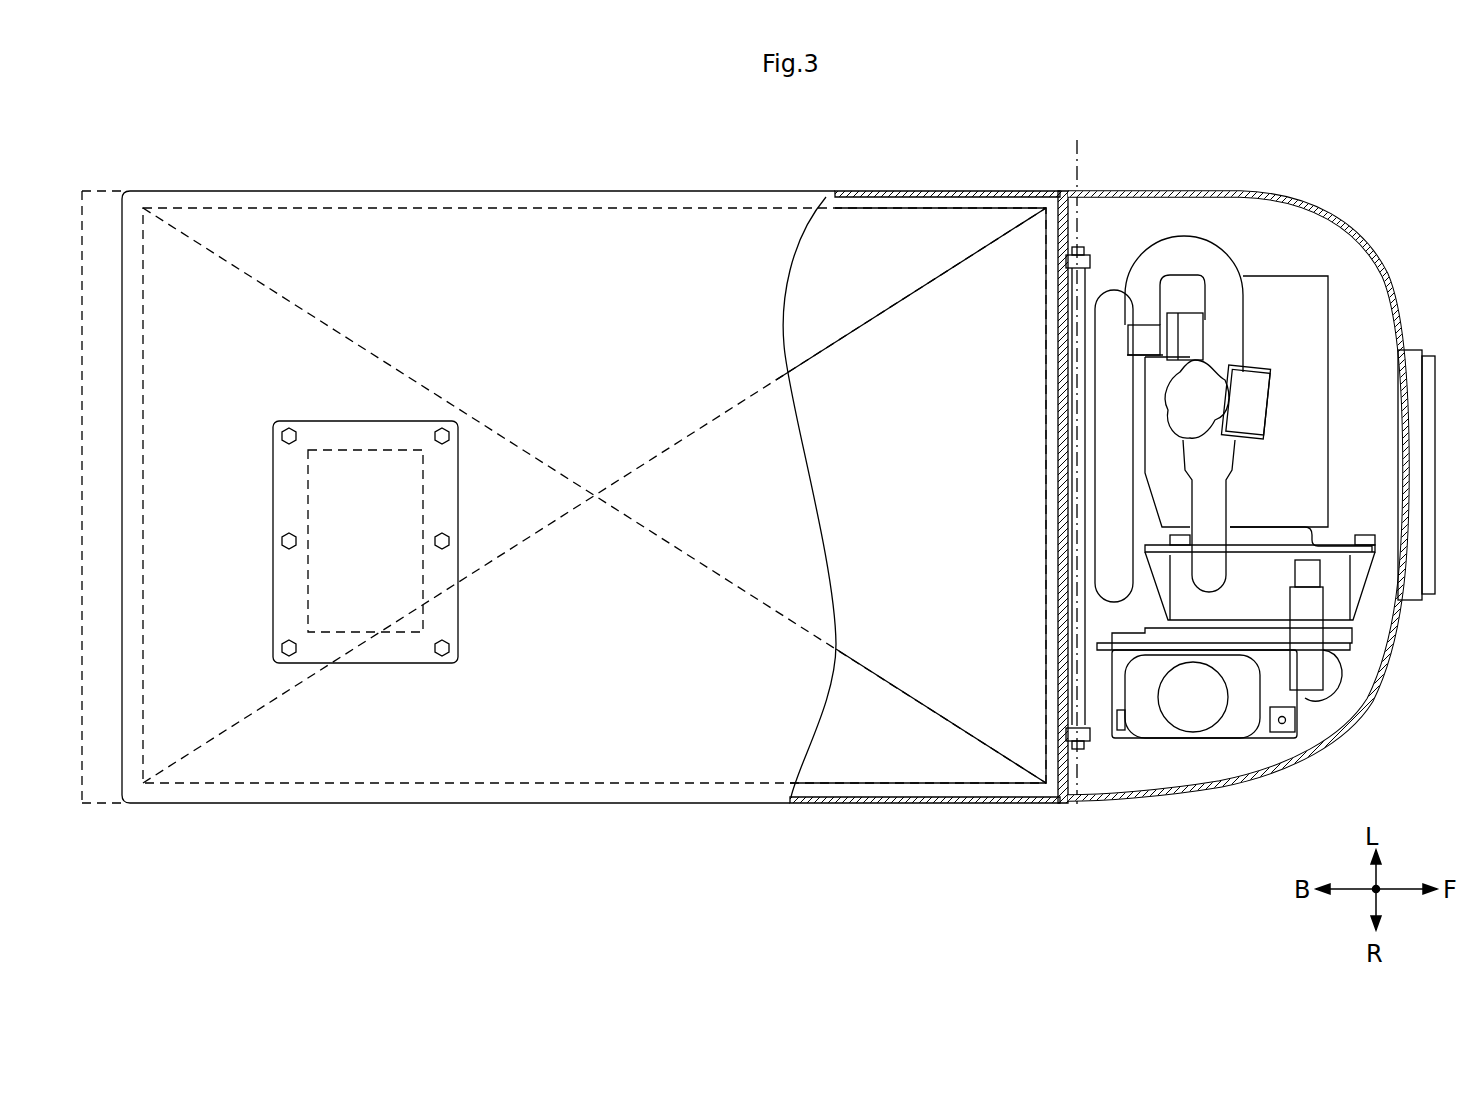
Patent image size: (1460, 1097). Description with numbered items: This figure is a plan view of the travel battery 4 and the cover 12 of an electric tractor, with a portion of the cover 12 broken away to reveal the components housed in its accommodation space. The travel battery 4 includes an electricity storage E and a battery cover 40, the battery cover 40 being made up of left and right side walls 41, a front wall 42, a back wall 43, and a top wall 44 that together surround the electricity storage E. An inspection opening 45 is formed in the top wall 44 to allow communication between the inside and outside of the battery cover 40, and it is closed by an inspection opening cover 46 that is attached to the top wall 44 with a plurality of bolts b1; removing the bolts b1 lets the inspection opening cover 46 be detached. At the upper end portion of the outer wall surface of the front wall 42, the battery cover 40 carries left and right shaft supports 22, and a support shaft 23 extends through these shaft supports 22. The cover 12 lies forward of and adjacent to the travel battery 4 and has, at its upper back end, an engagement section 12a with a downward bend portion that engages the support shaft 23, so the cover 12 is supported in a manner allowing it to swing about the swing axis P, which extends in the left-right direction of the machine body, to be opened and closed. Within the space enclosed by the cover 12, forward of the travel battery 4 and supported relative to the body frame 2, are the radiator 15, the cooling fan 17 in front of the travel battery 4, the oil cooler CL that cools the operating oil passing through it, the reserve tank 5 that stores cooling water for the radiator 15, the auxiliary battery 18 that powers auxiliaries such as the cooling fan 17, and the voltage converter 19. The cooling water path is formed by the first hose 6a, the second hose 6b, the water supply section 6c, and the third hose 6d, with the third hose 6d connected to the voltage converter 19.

The travel battery 4 is at (263, 157).
The battery cover 40 is at (408, 188).
The back wall 43 is at (122, 216).
The top wall 44 is at (617, 235).
The electricity storage E is at (893, 213).
The side walls 41 is at (950, 190).
The front wall 42 is at (1062, 553).
The swing axis P is at (1073, 459).
The shaft supports 22 is at (1090, 257).
The cover 12 is at (1307, 215).
The body frame 2 is at (1410, 352).
The first hose 6a is at (1185, 245).
The radiator 15 is at (1320, 405).
The support shaft 23 is at (1098, 602).
The cooling fan 17 is at (1157, 450).
The oil cooler CL is at (1110, 398).
The water supply section 6c is at (1212, 428).
The second hose 6b is at (1217, 526).
The voltage converter 19 is at (1340, 565).
The third hose 6d is at (1300, 610).
The reserve tank 5 is at (1228, 735).
The engagement section 12a is at (1090, 672).
The auxiliary battery 18 is at (1300, 715).
The inspection opening cover 46 is at (326, 436).
The inspection opening 45 is at (420, 560).
The bolts b1 is at (450, 545).